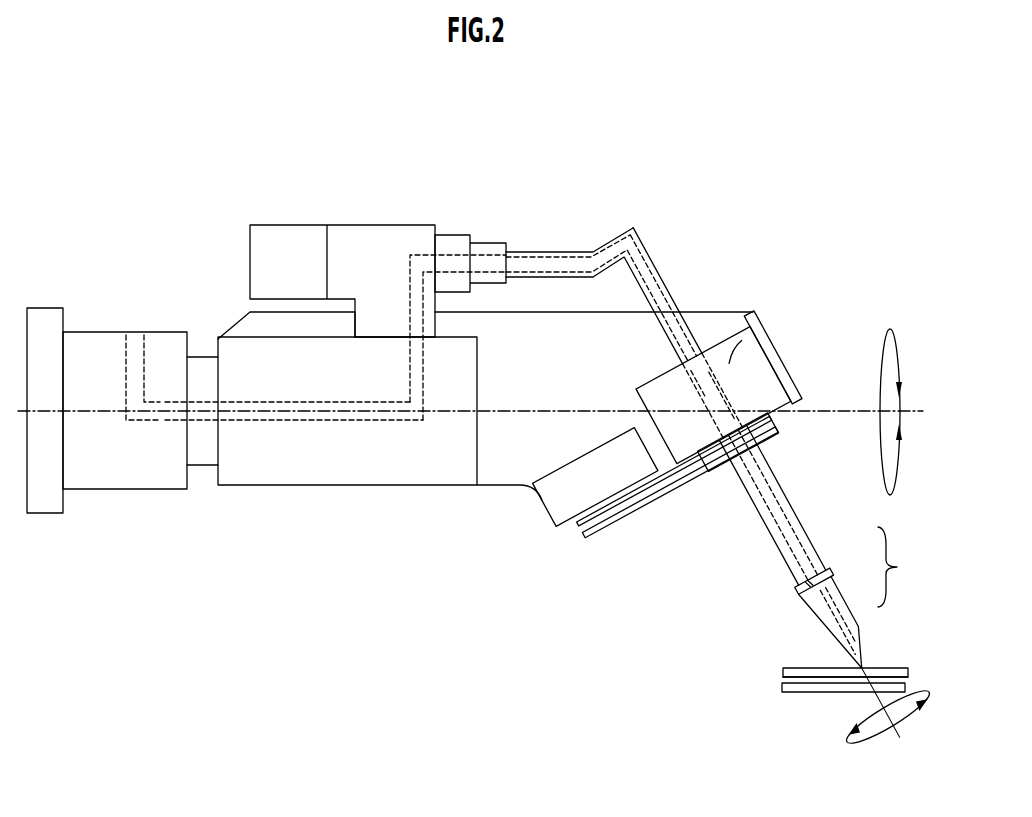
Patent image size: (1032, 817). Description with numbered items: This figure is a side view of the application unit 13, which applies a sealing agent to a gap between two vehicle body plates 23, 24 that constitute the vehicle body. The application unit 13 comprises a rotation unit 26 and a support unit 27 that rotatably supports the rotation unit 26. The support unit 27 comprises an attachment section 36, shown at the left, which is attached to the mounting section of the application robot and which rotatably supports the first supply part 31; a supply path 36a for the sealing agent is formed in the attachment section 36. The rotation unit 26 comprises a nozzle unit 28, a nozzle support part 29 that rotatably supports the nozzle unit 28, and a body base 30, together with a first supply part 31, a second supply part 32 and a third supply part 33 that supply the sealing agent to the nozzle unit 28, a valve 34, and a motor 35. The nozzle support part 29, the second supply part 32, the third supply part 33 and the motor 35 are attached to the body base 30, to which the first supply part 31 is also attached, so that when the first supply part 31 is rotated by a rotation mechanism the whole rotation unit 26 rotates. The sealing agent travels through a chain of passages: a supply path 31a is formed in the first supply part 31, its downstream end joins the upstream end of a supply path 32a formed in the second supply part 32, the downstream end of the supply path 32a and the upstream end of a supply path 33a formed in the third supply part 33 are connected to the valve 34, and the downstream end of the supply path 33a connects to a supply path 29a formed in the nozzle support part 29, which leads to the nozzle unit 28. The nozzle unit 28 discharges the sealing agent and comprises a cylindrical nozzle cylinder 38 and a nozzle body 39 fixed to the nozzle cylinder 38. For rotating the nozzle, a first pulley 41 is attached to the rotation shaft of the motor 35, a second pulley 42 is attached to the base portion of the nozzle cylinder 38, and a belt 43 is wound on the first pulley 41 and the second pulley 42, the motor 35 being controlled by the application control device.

The application unit 13 is at (680, 159).
The vehicle body plate 23 is at (787, 667).
The vehicle body plate 24 is at (810, 693).
The rotation unit 26 is at (441, 209).
The support unit 27 is at (117, 320).
The nozzle unit 28 is at (902, 567).
The nozzle support part 29 is at (778, 392).
The supply path 29a is at (784, 332).
The body base 30 is at (722, 322).
The first supply part 31 is at (370, 470).
The supply path 31a is at (273, 420).
The second supply part 32 is at (350, 237).
The supply path 32a is at (405, 295).
The third supply part 33 is at (637, 226).
The supply path 33a is at (553, 250).
The valve 34 is at (490, 246).
The motor 35 is at (558, 504).
The attachment section 36 is at (97, 470).
The supply path 36a is at (169, 428).
The nozzle cylinder 38 is at (818, 546).
The nozzle body 39 is at (830, 584).
The first pulley 41 is at (610, 532).
The second pulley 42 is at (717, 470).
The belt 43 is at (662, 494).